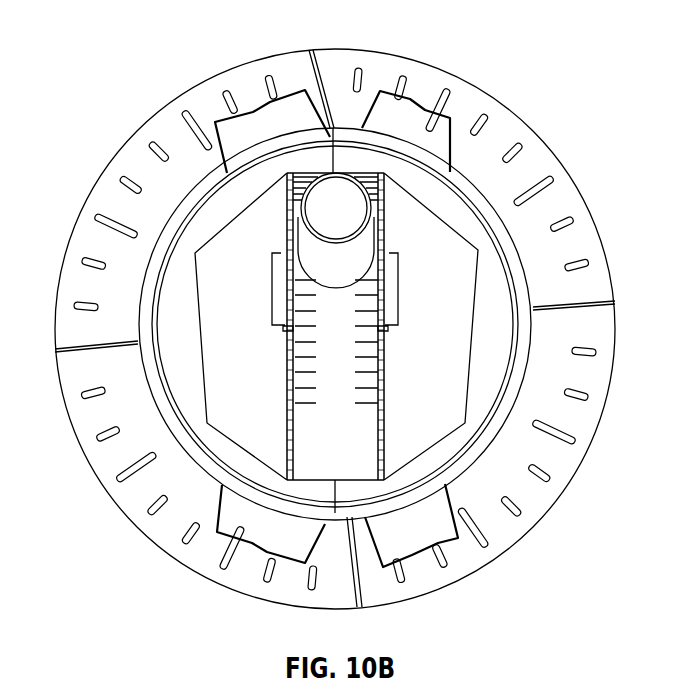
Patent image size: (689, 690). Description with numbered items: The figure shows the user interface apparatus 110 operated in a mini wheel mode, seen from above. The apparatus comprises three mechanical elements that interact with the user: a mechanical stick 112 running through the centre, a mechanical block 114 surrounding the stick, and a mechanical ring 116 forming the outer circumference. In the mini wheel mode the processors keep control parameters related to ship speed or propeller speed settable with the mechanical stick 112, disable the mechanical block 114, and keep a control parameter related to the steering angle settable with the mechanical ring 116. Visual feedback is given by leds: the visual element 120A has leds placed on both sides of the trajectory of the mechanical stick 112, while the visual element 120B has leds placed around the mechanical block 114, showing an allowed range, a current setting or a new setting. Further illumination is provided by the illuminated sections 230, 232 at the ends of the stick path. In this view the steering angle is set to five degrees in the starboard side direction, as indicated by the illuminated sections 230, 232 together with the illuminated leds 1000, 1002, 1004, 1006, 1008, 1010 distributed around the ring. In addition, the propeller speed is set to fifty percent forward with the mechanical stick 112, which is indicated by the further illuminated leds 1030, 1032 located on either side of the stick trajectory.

The user interface apparatus 110 is at (100, 78).
The mechanical stick 112 is at (337, 286).
The mechanical block 114 is at (204, 336).
The mechanical ring 116 is at (56, 323).
The visual element 120A is at (288, 372).
The visual element 120B is at (512, 292).
The illuminated section 230 is at (338, 493).
The illuminated section 232 is at (337, 163).
The illuminated led 1000 is at (352, 147).
The illuminated led 1002 is at (256, 96).
The illuminated led 1004 is at (420, 103).
The illuminated led 1006 is at (345, 513).
The illuminated led 1008 is at (256, 548).
The illuminated led 1010 is at (427, 550).
The further illuminated led 1030 is at (272, 290).
The further illuminated led 1032 is at (398, 290).